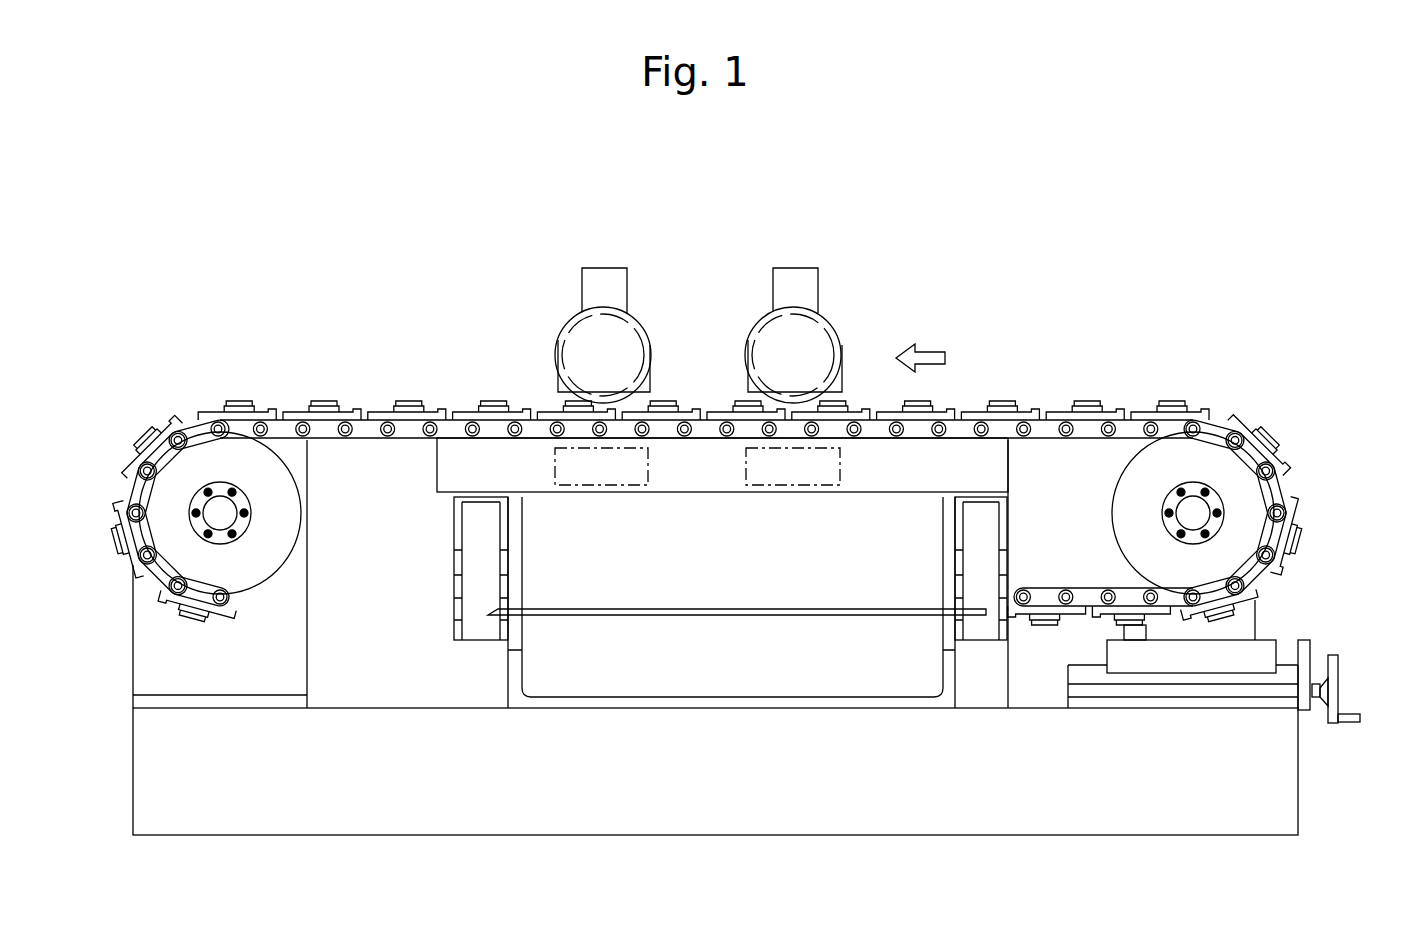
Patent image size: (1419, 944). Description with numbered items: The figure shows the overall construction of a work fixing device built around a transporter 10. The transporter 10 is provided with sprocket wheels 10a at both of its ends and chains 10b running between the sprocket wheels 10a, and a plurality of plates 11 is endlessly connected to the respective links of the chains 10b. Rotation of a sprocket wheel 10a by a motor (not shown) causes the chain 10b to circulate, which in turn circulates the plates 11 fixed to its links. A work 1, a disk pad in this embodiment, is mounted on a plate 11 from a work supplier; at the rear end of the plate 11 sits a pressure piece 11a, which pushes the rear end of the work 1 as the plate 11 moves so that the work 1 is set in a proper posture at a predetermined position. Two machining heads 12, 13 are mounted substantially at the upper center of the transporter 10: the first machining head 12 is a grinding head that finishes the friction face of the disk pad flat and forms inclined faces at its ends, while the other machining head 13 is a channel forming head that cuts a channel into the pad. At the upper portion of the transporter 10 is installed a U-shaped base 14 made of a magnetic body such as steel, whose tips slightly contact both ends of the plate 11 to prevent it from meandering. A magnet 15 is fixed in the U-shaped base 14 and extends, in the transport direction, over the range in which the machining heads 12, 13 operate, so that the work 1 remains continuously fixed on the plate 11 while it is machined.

The work 1 is at (752, 401).
The transporter 10 is at (745, 483).
The sprocket wheel 10a is at (172, 494).
The chain 10b is at (418, 440).
The plate 11 is at (465, 413).
The pressure piece 11a is at (1035, 412).
The first machining head 12 is at (818, 290).
The machining head 13 is at (582, 290).
The U-shaped base 14 is at (910, 480).
The magnet 15 is at (793, 478).